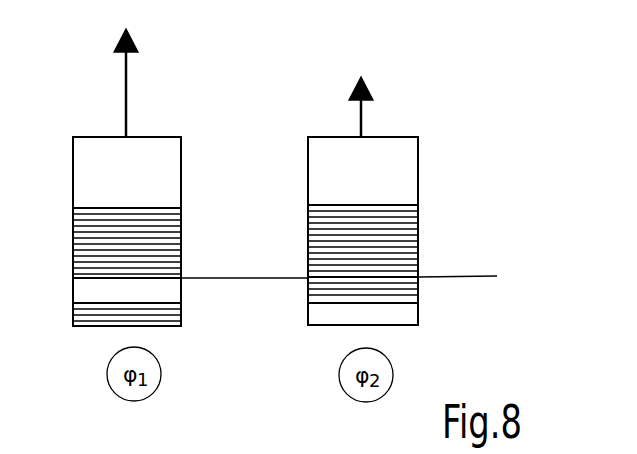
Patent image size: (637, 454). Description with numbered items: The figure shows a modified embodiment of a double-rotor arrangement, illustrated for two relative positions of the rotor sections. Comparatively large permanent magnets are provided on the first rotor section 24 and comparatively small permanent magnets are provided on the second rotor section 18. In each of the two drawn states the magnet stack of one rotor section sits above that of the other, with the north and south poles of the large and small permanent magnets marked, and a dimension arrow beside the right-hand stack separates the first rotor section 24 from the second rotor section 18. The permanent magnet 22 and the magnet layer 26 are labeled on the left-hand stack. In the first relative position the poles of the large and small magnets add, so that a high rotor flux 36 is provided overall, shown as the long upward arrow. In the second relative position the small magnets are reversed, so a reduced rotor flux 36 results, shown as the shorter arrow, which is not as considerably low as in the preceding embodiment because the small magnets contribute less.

The rotor flux 36 is at (124, 105).
The permanent magnet 22 is at (160, 153).
The magnet layer 26 is at (182, 303).
The first rotor section 24 is at (506, 273).
The second rotor section 18 is at (506, 281).